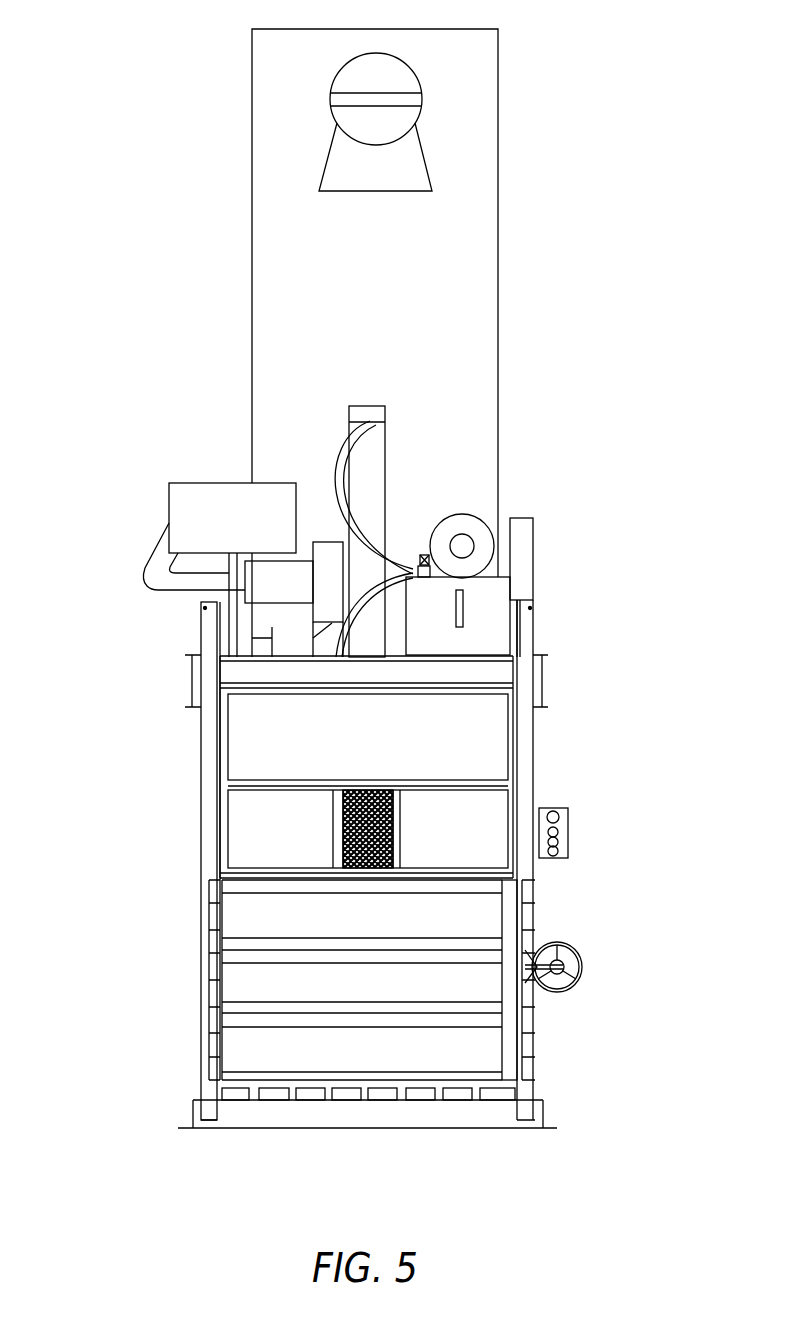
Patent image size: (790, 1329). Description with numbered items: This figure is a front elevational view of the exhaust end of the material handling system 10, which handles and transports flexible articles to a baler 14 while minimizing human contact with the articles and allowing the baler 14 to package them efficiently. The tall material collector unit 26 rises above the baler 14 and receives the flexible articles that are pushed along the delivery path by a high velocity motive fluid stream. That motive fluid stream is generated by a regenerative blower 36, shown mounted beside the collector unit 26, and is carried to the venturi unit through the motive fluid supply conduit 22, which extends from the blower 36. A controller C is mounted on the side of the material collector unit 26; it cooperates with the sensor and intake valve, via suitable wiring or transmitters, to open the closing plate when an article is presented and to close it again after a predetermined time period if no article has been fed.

The material handling system 10 is at (86, 156).
The baler 14 is at (586, 900).
The motive fluid supply conduit 22 is at (158, 580).
The material collector unit 26 is at (532, 297).
The regenerative blower 36 is at (181, 456).
The controller C is at (568, 818).